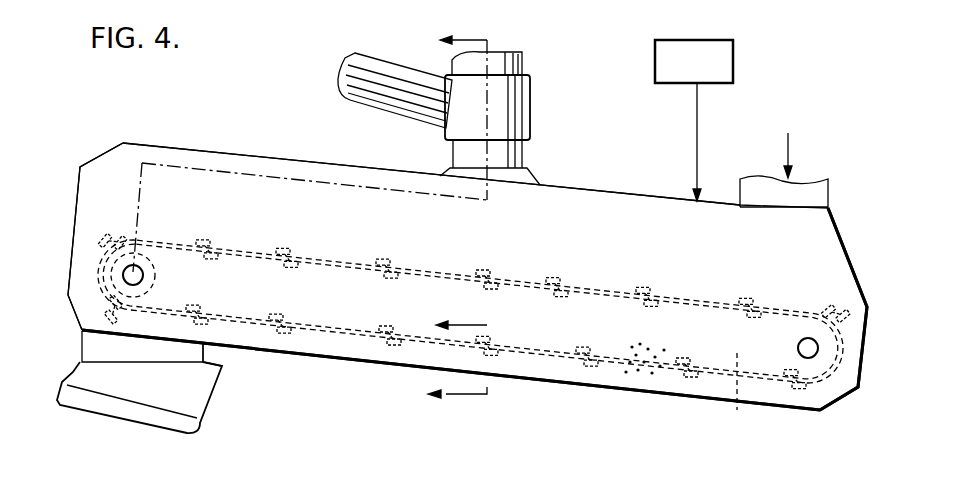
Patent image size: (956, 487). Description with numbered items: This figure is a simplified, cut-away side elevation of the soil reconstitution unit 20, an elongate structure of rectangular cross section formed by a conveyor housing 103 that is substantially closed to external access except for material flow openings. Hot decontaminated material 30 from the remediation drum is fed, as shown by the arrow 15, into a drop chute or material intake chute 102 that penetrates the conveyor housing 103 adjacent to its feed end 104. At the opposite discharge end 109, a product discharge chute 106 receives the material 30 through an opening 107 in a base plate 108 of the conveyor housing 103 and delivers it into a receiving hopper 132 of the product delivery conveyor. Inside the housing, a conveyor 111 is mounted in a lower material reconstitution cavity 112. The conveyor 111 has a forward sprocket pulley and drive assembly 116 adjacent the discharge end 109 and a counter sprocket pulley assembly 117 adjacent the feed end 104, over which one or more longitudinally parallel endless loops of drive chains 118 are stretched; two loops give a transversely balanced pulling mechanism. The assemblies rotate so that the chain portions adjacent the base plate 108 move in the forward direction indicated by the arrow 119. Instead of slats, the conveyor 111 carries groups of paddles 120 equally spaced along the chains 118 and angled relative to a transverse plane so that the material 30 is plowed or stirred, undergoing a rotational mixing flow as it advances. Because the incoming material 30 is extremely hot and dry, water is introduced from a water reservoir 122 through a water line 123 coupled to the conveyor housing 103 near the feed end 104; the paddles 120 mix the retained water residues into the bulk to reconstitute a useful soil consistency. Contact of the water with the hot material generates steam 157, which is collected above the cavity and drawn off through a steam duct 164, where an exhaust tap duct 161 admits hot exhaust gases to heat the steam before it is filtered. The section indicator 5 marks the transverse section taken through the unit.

The arrow 15 is at (788, 133).
The soil reconstitution unit 20 is at (638, 191).
The material 30 is at (635, 388).
The material intake chute 102 is at (829, 193).
The conveyor housing 103 is at (256, 152).
The feed end 104 is at (845, 250).
The product discharge chute 106 is at (214, 353).
The opening 107 is at (84, 328).
The base plate 108 is at (363, 362).
The discharge end 109 is at (77, 200).
The conveyor 111 is at (172, 285).
The lower material reconstitution cavity 112 is at (722, 391).
The forward sprocket pulley and drive assembly 116 is at (124, 275).
The counter sprocket pulley assembly 117 is at (818, 348).
The drive chains 118 is at (537, 347).
The arrow 119 is at (464, 314).
The paddles 120 is at (300, 362).
The water reservoir 122 is at (733, 41).
The water line 123 is at (699, 117).
The receiving hopper 132 is at (206, 393).
The steam 157 is at (567, 212).
The exhaust tap duct 161 is at (380, 107).
The steam duct 164 is at (507, 118).
The section line 5- 5 is at (457, 220).